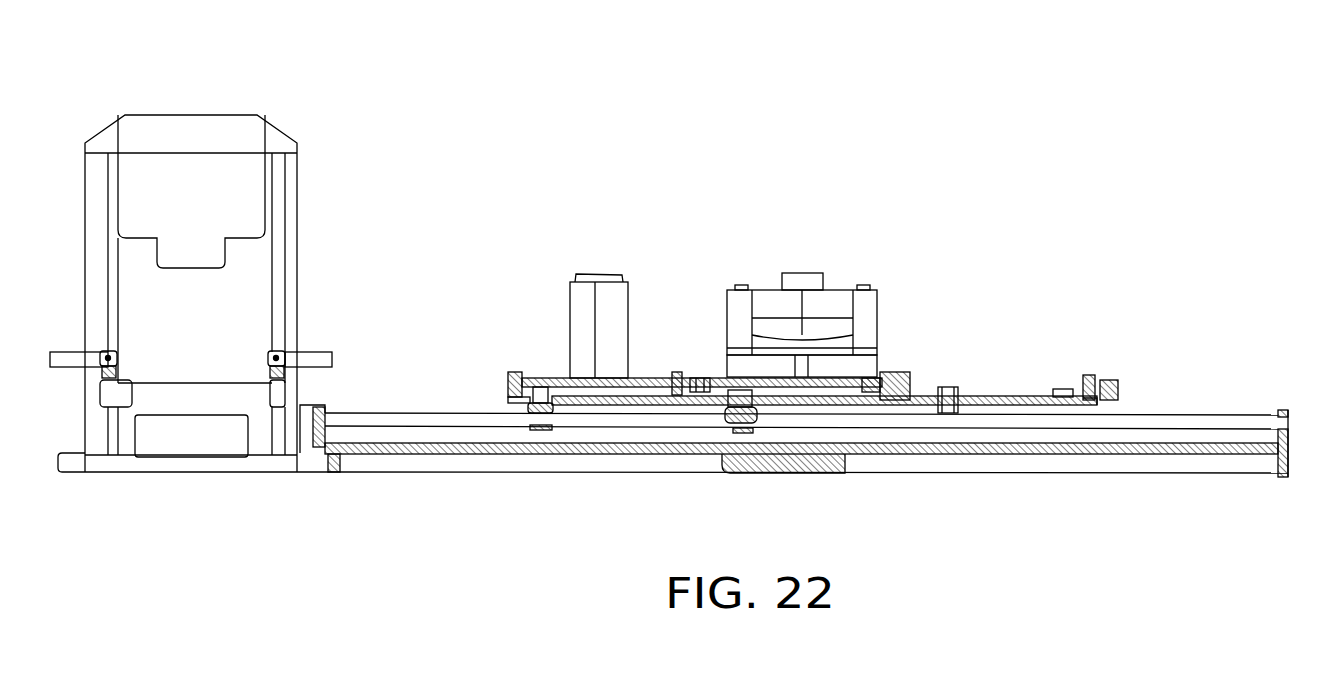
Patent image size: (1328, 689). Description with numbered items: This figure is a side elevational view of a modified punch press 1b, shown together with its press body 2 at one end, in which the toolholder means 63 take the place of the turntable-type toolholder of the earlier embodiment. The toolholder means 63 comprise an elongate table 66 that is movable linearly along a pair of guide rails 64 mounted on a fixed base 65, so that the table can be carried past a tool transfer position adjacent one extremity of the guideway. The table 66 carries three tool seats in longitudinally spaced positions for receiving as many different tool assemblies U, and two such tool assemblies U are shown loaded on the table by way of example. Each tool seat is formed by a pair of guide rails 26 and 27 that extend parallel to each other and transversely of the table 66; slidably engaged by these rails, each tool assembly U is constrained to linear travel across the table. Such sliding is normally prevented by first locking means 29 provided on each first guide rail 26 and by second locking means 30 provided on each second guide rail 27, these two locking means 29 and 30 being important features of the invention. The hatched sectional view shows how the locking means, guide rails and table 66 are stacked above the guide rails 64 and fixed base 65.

The machine body 2 is at (230, 118).
The modified punch press 1b is at (908, 230).
The tool assembly U is at (608, 296).
The second guide rail 27 is at (512, 372).
The first guide rail 26 is at (680, 375).
The first locking means 29 is at (696, 375).
The second locking means 30 is at (508, 377).
The elongate table 66 is at (1015, 398).
The toolholder means 63 is at (1170, 350).
The guide rail 64 is at (1205, 420).
The fixed base 65 is at (1153, 456).